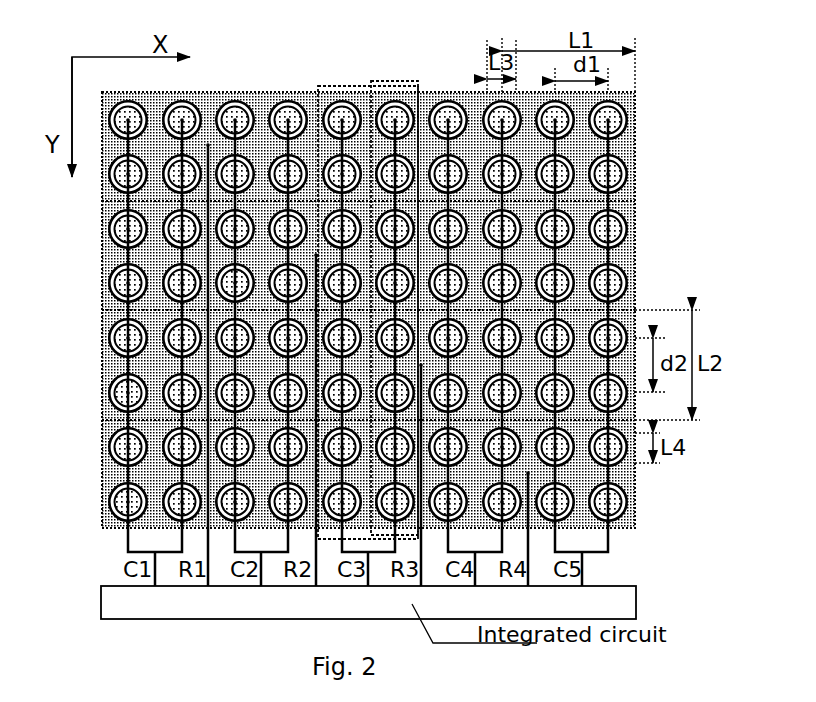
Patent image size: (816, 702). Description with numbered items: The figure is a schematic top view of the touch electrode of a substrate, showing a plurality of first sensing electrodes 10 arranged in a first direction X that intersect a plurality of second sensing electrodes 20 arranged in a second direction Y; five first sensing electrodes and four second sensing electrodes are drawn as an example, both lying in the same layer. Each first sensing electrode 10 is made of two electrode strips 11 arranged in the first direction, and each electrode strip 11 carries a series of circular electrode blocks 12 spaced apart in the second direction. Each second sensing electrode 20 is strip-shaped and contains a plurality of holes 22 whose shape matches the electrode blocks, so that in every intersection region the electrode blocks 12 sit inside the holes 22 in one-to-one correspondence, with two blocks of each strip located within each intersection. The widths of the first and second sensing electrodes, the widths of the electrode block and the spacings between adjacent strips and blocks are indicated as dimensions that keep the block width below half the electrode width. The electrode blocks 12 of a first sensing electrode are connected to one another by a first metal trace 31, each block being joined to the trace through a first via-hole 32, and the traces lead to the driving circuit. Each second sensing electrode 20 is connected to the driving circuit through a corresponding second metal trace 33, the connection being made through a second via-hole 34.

The first sensing electrode 10 is at (343, 86).
The electrode strip 11 is at (397, 81).
The electrode block 12 is at (395, 108).
The second sensing electrode 20 is at (630, 258).
The hole 22 is at (632, 215).
The first metal trace 31 is at (123, 483).
The first via-hole 32 is at (126, 389).
The second metal trace 33 is at (215, 268).
The second via-hole 34 is at (208, 145).